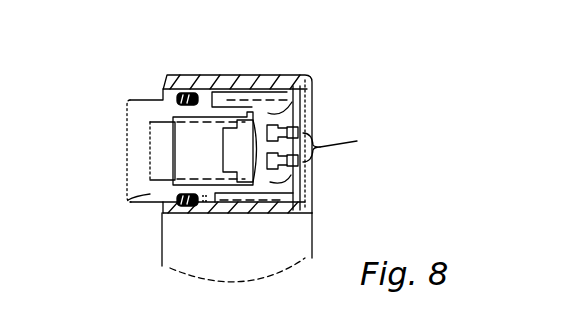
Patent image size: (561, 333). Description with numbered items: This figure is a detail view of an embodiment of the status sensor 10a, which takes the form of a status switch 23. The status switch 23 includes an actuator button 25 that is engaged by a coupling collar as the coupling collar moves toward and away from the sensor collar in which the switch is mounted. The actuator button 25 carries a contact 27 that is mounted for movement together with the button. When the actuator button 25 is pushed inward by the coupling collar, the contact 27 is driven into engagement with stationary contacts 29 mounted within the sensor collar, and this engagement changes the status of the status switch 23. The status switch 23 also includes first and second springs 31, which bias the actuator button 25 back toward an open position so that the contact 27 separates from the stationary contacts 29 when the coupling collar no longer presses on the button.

The status sensor 10a is at (107, 113).
The status switch 23 is at (127, 157).
The actuator button 25 is at (127, 202).
The contact 27 is at (238, 142).
The stationary contacts 29 is at (292, 102).
The first and second springs 31 is at (193, 122).